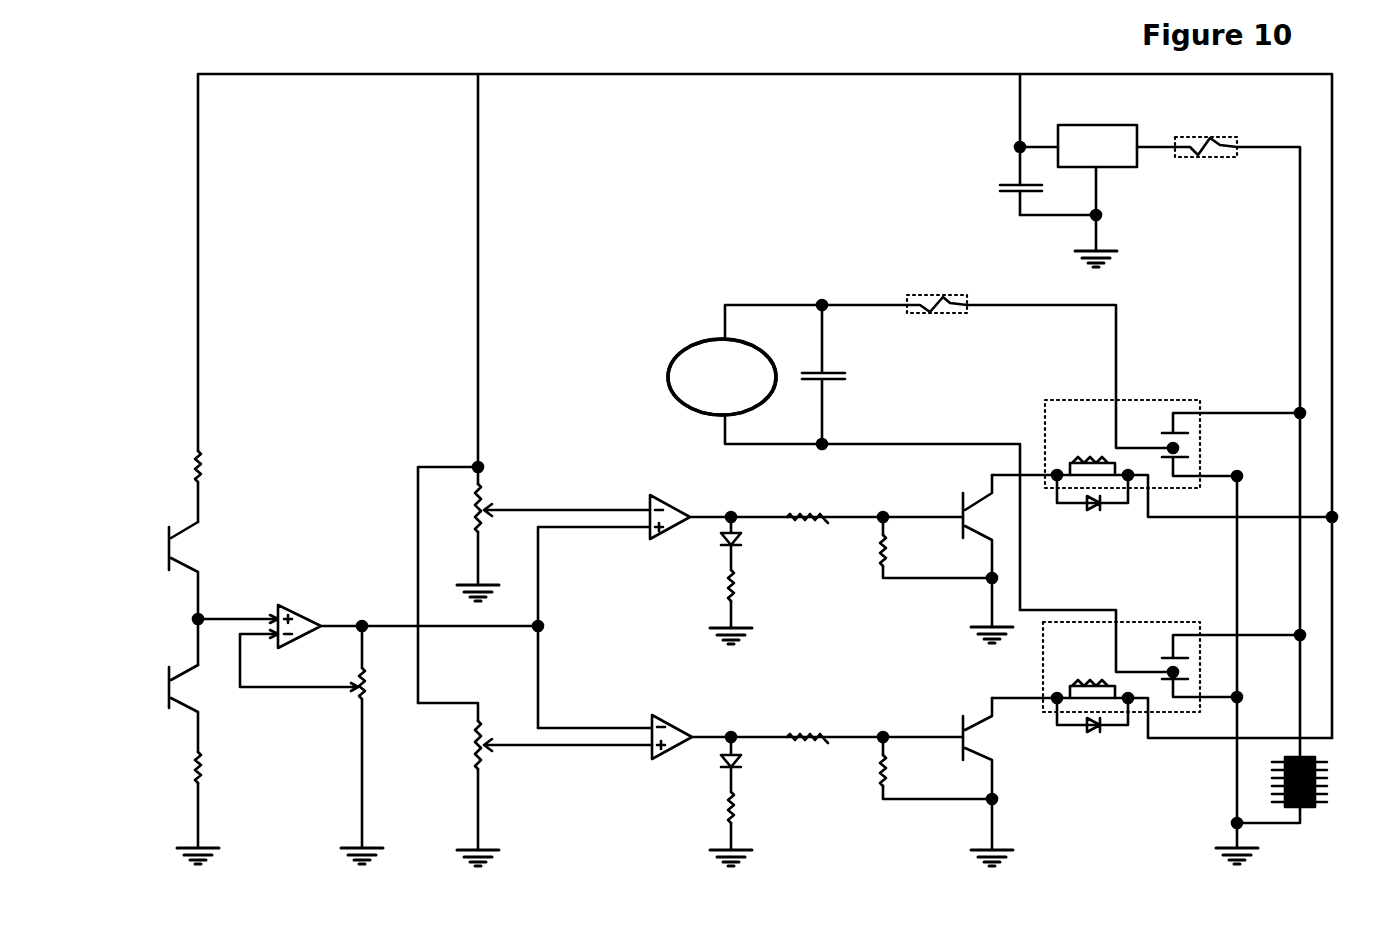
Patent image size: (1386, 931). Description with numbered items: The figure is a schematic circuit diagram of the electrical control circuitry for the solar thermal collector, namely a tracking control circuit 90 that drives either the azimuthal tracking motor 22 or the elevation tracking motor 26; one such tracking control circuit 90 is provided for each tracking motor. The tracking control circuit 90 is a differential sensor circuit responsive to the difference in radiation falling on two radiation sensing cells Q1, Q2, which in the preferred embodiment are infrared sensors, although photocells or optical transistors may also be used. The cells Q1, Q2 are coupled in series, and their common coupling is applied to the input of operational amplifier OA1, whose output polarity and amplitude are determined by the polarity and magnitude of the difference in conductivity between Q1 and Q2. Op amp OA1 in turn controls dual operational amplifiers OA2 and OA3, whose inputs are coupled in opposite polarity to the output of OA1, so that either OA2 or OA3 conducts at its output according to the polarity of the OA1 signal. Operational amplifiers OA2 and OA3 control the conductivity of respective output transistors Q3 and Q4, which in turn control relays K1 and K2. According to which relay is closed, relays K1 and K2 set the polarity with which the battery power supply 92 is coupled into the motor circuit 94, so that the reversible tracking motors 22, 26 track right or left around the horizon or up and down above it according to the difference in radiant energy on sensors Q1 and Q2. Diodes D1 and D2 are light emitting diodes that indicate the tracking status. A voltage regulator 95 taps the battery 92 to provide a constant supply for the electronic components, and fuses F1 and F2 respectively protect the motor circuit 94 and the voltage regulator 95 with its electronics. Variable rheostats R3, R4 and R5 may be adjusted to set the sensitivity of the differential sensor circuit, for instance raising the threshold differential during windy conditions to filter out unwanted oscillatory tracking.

The tracking control circuit 90 is at (746, 406).
The voltage regulator 95 is at (1068, 178).
The fuse F1 is at (1193, 135).
The fuse F2 is at (932, 296).
The elevation tracking motor 26 is at (683, 357).
The azimuthal tracking motor 22 is at (690, 403).
The motor circuit 94 is at (967, 390).
The relay K1 is at (1178, 397).
The relay K2 is at (1152, 707).
The battery power supply 92 is at (1295, 670).
The radiation sensing cell Q1 is at (204, 558).
The radiation sensing cell Q2 is at (197, 764).
The output transistor Q3 is at (900, 555).
The output transistor Q4 is at (900, 779).
The operational amplifier OA1 is at (300, 604).
The operational amplifier OA2 is at (750, 603).
The operational amplifier OA3 is at (675, 723).
The variable rheostat R3 is at (311, 742).
The variable rheostat R4 is at (534, 582).
The variable rheostat R5 is at (535, 781).
The light emitting diode D1 is at (748, 578).
The light emitting diode D2 is at (750, 799).